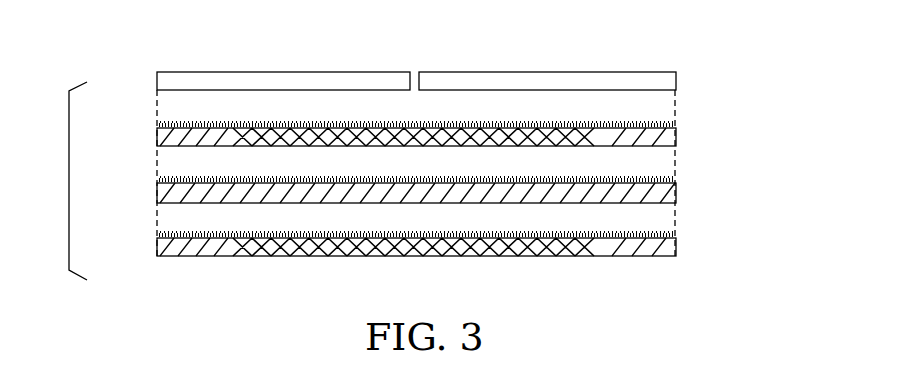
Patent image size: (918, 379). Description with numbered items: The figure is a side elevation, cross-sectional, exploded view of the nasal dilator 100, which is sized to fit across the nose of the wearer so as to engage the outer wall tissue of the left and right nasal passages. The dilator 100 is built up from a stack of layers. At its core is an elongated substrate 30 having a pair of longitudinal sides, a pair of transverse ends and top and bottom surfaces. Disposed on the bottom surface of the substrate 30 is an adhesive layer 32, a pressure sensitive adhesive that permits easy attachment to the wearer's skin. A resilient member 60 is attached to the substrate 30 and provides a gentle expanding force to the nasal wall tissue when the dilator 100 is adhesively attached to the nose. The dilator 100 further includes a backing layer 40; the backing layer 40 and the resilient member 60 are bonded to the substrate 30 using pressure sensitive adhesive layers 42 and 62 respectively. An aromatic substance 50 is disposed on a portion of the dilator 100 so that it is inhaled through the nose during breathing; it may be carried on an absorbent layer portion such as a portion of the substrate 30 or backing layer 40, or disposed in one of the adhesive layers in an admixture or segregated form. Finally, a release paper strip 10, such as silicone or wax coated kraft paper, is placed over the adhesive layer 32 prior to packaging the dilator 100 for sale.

The release paper strip 10 is at (447, 78).
The elongated substrate 30 is at (655, 141).
The adhesive layer 32 is at (658, 126).
The backing layer 40 is at (660, 241).
The pressure sensitive adhesive layer 42 is at (190, 236).
The aromatic substance 50 is at (425, 141).
The resilient member 60 is at (660, 188).
The pressure sensitive adhesive layer 62 is at (190, 181).
The nasal dilator 100 is at (708, 320).